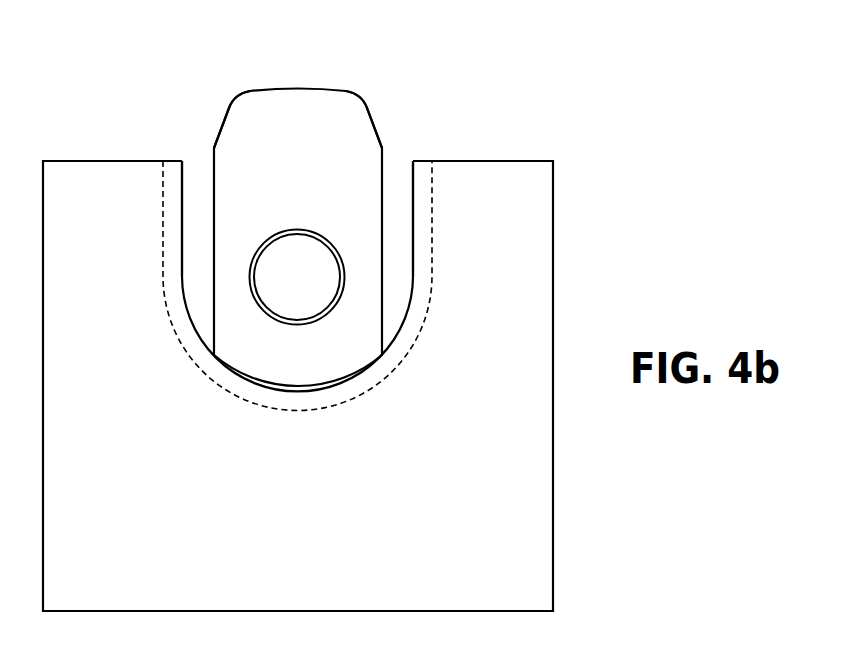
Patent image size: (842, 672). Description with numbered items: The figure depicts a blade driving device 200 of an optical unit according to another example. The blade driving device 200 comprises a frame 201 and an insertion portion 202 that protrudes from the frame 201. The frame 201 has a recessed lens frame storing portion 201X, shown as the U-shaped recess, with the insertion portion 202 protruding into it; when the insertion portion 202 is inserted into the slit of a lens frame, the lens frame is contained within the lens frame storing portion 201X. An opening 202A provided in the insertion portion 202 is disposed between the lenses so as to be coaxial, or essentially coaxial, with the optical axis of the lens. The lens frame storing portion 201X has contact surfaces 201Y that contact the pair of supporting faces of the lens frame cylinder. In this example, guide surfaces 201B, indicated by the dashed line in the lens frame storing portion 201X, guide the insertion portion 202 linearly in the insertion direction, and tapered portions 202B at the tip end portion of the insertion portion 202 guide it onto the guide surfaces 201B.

The blade driving device 200 is at (504, 162).
The frame 201 is at (553, 276).
The guide surfaces 201B is at (172, 226).
The lens frame storing portion 201X is at (183, 178).
The contact surfaces 201Y is at (423, 190).
The insertion portion 202 is at (298, 88).
The opening 202A is at (297, 236).
The tapered portions 202B is at (237, 97).